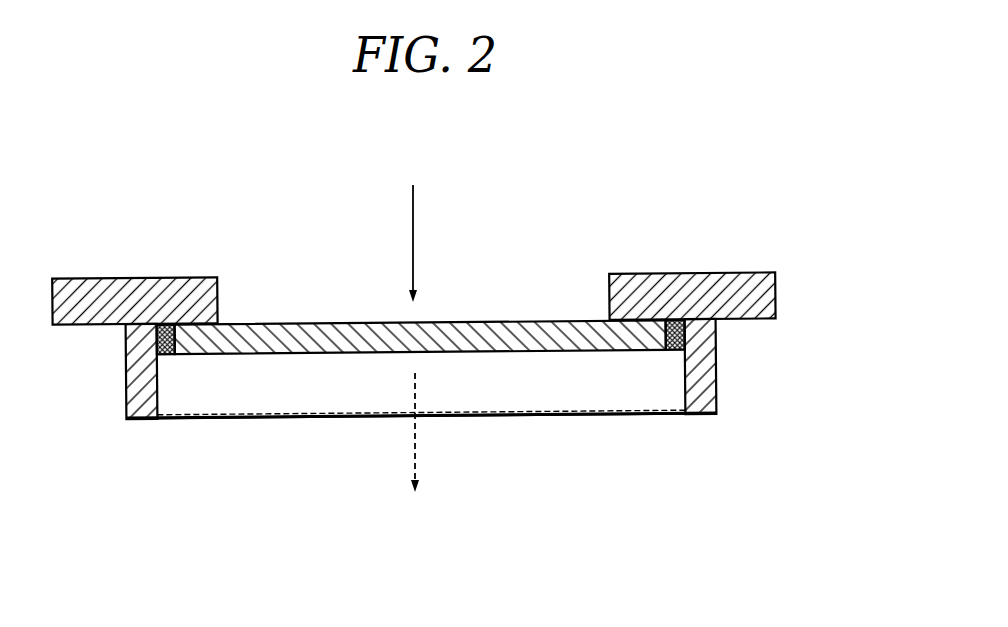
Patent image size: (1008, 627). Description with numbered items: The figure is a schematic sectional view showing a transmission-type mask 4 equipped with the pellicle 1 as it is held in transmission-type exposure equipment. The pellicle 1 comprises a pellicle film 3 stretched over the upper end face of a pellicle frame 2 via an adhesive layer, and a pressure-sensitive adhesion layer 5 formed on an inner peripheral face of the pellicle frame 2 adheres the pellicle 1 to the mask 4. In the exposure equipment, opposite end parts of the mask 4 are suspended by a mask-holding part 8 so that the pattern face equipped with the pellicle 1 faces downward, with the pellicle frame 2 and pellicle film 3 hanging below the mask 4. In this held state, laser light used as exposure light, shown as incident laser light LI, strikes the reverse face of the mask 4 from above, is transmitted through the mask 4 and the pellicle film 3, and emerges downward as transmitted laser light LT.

The pellicle 1 is at (442, 383).
The pellicle frame 2 is at (716, 380).
The pellicle film 3 is at (587, 415).
The mask 4 is at (497, 331).
The pressure-sensitive adhesion layer 5 is at (674, 349).
The mask-holding part 8 is at (777, 300).
The incident laser light LI is at (413, 262).
The transmitted laser light LT is at (415, 445).